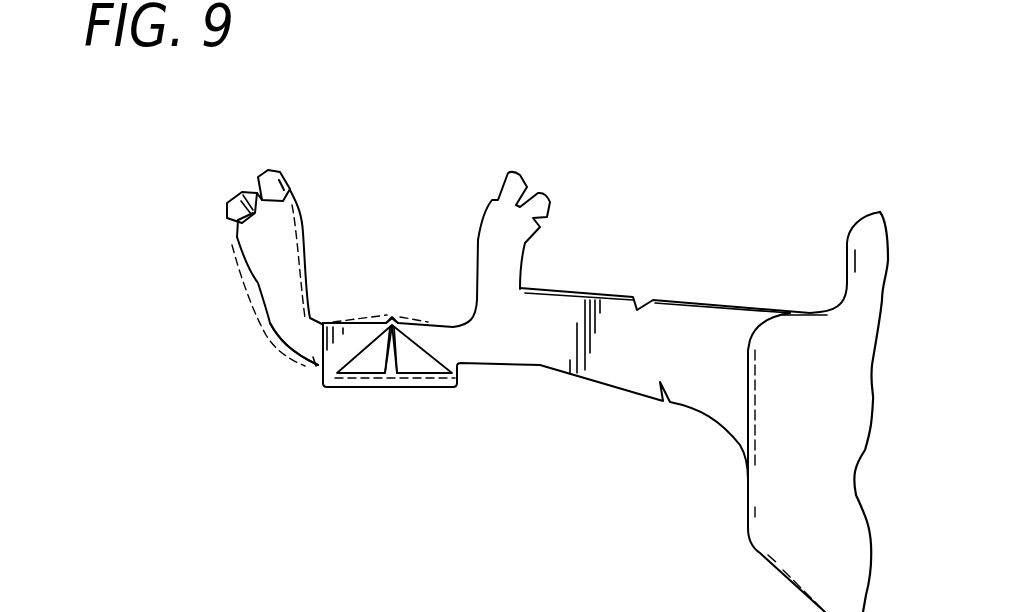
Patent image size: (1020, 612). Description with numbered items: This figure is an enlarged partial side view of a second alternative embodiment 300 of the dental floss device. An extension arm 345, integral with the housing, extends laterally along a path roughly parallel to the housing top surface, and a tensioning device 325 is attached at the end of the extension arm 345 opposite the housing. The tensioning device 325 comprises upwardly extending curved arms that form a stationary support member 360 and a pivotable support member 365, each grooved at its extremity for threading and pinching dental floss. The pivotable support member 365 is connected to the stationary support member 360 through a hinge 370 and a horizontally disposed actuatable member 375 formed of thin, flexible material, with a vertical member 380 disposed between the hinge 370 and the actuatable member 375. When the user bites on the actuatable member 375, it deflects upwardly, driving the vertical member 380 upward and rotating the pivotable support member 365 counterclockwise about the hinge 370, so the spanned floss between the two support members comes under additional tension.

The second alternative embodiment 300 is at (448, 101).
The tensioning device 325 is at (262, 367).
The extension arm 345 is at (598, 300).
The stationary support member 360 is at (517, 240).
The pivotable support member 365 is at (267, 253).
The hinge 370 is at (391, 322).
The actuatable member 375 is at (397, 387).
The vertical member 380 is at (398, 345).